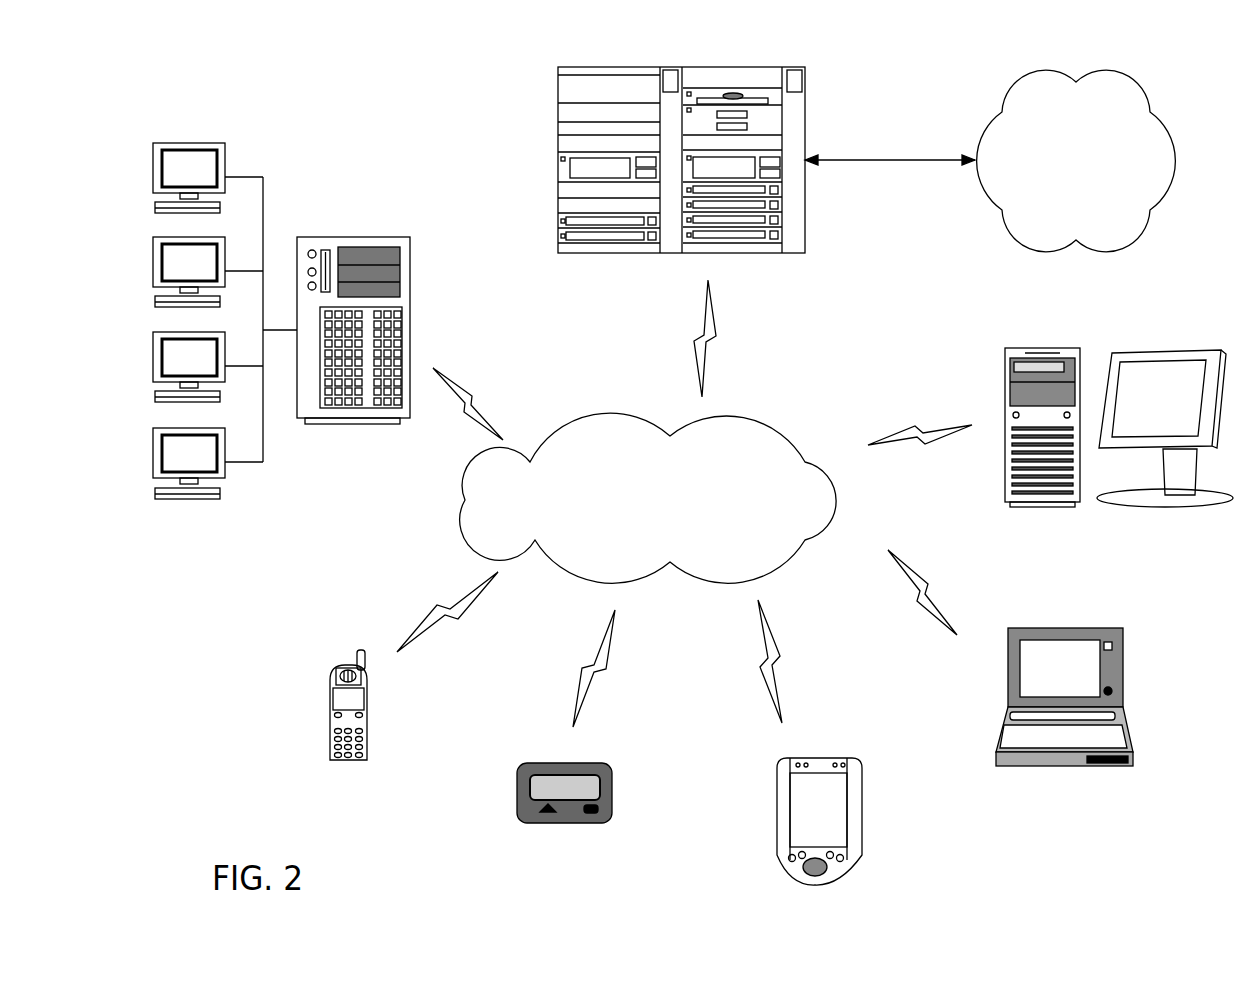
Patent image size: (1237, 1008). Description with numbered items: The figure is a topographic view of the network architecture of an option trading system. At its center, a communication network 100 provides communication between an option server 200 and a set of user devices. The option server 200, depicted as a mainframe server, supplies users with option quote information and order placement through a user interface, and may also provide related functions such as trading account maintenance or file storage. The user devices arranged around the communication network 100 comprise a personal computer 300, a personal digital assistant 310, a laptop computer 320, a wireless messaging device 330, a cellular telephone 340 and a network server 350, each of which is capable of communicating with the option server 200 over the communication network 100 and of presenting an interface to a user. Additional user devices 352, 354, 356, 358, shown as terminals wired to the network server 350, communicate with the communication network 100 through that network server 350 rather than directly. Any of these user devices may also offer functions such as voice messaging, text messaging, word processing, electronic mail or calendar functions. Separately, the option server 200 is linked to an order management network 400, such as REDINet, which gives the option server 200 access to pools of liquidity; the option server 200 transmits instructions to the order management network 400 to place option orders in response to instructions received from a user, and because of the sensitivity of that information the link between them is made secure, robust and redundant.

The communication network 100 is at (625, 420).
The option server 200 is at (684, 67).
The personal computer 300 is at (1103, 350).
The personal digital assistant 310 is at (1067, 628).
The laptop computer 320 is at (818, 757).
The wireless messaging device 330 is at (523, 768).
The cellular telephone 340 is at (348, 665).
The network server 350 is at (353, 236).
The user device 352 is at (153, 150).
The user device 354 is at (153, 243).
The user device 356 is at (153, 343).
The user device 358 is at (153, 437).
The order management network 400 is at (1177, 157).